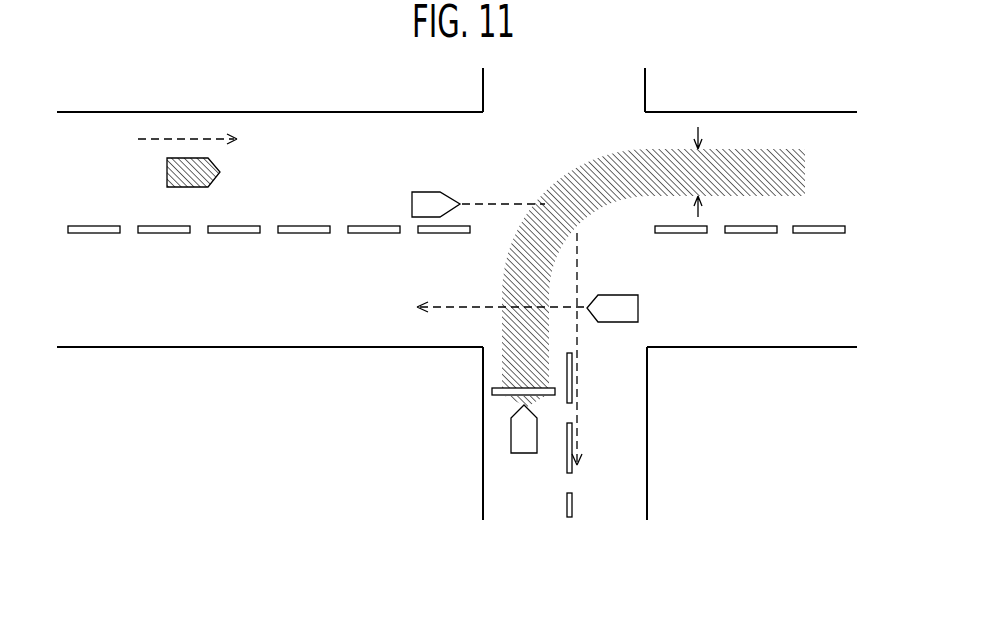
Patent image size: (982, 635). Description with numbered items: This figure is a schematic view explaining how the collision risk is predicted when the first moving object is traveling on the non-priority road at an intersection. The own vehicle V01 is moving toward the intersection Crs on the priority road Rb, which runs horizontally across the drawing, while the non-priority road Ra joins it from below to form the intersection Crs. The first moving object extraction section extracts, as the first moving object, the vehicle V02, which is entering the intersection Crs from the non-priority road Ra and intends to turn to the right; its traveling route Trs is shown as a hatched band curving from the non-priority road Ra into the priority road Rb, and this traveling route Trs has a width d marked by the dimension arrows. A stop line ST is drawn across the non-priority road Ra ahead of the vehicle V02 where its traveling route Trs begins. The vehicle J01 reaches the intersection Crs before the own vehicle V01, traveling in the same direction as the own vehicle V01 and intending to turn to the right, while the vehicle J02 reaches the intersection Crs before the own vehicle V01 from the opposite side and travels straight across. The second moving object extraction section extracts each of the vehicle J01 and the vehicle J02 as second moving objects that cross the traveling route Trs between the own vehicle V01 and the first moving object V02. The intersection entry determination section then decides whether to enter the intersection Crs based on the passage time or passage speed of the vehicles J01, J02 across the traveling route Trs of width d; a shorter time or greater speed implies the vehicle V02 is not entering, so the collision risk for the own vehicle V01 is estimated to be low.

The own vehicle V01 is at (165, 173).
The vehicle (first moving object) V02 is at (521, 455).
The vehicle (second moving object) J01 is at (435, 190).
The vehicle (second moving object) J02 is at (640, 309).
The stop line ST is at (490, 389).
The traveling route Trs is at (806, 170).
The intersection Crs is at (567, 150).
The non-priority road Ra is at (620, 497).
The priority road Rb is at (770, 283).
The width d is at (702, 213).